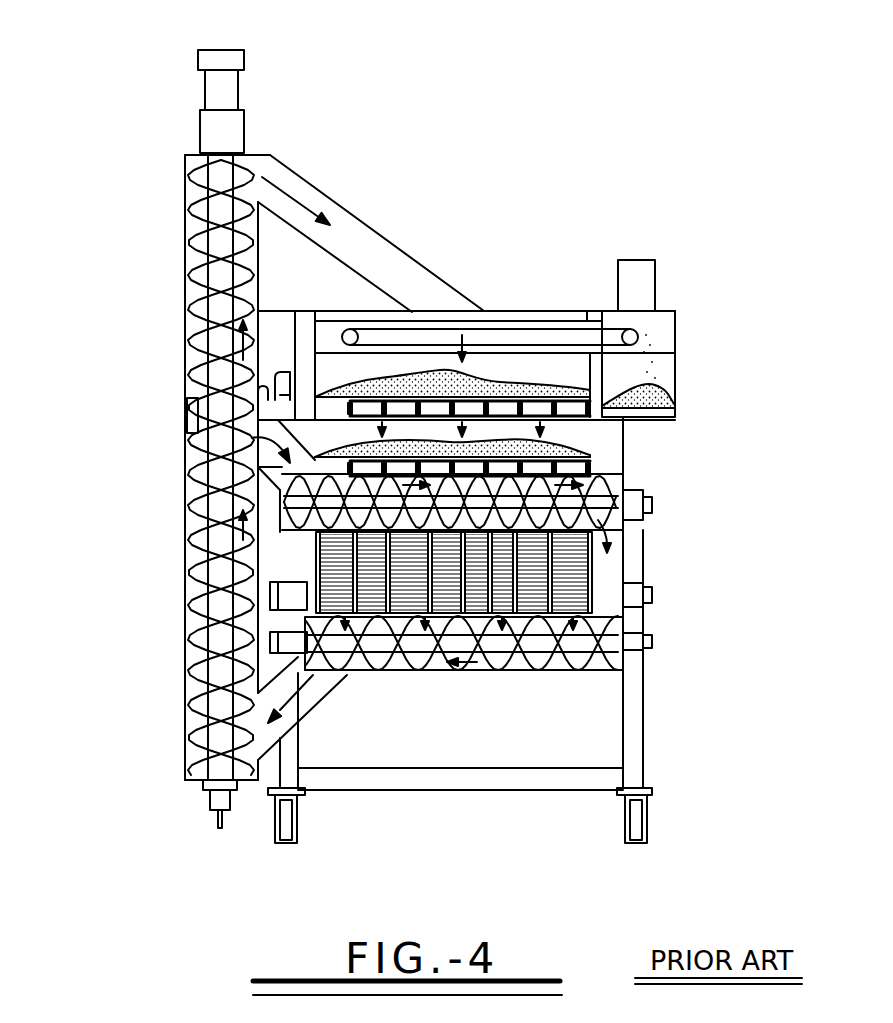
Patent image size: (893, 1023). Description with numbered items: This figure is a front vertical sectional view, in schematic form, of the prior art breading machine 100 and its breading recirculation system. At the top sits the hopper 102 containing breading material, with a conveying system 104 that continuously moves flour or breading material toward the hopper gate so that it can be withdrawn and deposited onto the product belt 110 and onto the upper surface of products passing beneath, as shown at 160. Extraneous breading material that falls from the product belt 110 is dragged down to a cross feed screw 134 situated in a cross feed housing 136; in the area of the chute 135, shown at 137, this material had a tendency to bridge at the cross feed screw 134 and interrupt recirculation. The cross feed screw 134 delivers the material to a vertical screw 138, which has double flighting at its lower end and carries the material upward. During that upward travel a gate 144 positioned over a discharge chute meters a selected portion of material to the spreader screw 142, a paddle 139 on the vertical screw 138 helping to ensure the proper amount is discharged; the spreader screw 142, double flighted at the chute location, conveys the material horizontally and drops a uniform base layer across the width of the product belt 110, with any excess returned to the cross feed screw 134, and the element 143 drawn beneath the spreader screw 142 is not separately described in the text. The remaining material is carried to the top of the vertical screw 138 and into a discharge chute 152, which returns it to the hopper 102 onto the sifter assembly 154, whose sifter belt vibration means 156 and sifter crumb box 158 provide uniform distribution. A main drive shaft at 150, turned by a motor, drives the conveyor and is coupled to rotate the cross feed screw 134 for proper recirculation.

The breading machine 100 is at (541, 106).
The hopper 102 is at (507, 310).
The conveying system 104 is at (587, 397).
The product belt 110 is at (533, 603).
The cross feed screw 134 is at (613, 643).
The chute 135 is at (313, 710).
The cross feed housing 136 is at (477, 673).
The bridging area 137 is at (260, 690).
The vertical screw 138 is at (185, 320).
The paddle 139 is at (185, 403).
The spreader screw 142 is at (610, 483).
The screen bank 143 is at (610, 563).
The gate 144 is at (257, 400).
The main drive shaft 150 is at (613, 596).
The discharge chute 152 is at (317, 187).
The sifter assembly 154 is at (367, 330).
The sifter belt vibration means 156 is at (584, 333).
The sifter crumb box 158 is at (677, 377).
The coated product location 160 is at (595, 452).